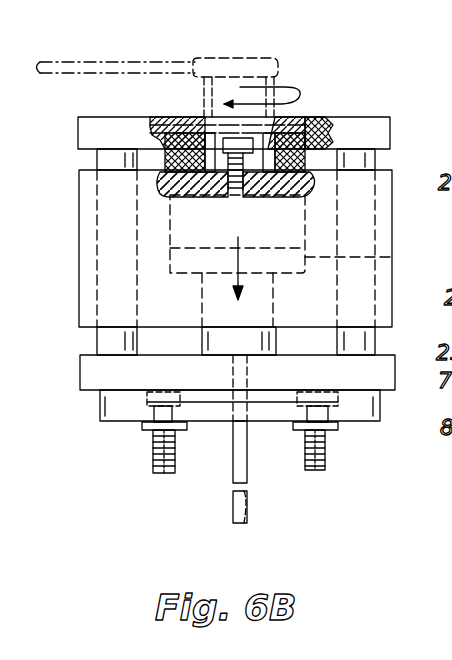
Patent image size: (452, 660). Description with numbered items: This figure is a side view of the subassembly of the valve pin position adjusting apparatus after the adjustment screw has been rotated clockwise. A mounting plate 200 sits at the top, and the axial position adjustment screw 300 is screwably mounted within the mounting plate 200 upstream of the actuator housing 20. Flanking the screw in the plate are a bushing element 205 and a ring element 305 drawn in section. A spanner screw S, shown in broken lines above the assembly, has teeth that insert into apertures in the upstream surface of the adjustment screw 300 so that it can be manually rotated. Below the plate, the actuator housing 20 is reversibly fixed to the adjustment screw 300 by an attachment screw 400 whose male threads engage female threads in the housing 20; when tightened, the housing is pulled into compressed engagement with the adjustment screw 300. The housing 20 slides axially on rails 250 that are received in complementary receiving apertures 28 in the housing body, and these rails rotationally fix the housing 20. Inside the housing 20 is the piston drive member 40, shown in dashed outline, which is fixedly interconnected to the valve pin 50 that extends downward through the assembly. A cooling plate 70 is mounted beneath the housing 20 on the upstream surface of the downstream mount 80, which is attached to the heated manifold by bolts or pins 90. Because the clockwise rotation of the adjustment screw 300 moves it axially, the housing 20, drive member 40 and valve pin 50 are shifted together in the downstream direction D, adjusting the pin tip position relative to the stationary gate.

The spanner screw S is at (142, 60).
The mounting plate 200 is at (376, 116).
The bushing 205 is at (175, 124).
The attachment screw 400 is at (208, 130).
The axial position adjustment screw 300 is at (293, 130).
The retaining ring 305 is at (321, 127).
The actuator housing 20 is at (79, 190).
The receiving apertures 28 is at (96, 302).
The piston drive member 40 is at (392, 253).
The downstream direction D is at (240, 255).
The rails 250 is at (97, 342).
The cooling plate 70 is at (80, 377).
The downstream mount 80 is at (100, 408).
The bolts or pins 90 is at (325, 447).
The valve pin 50 is at (247, 444).